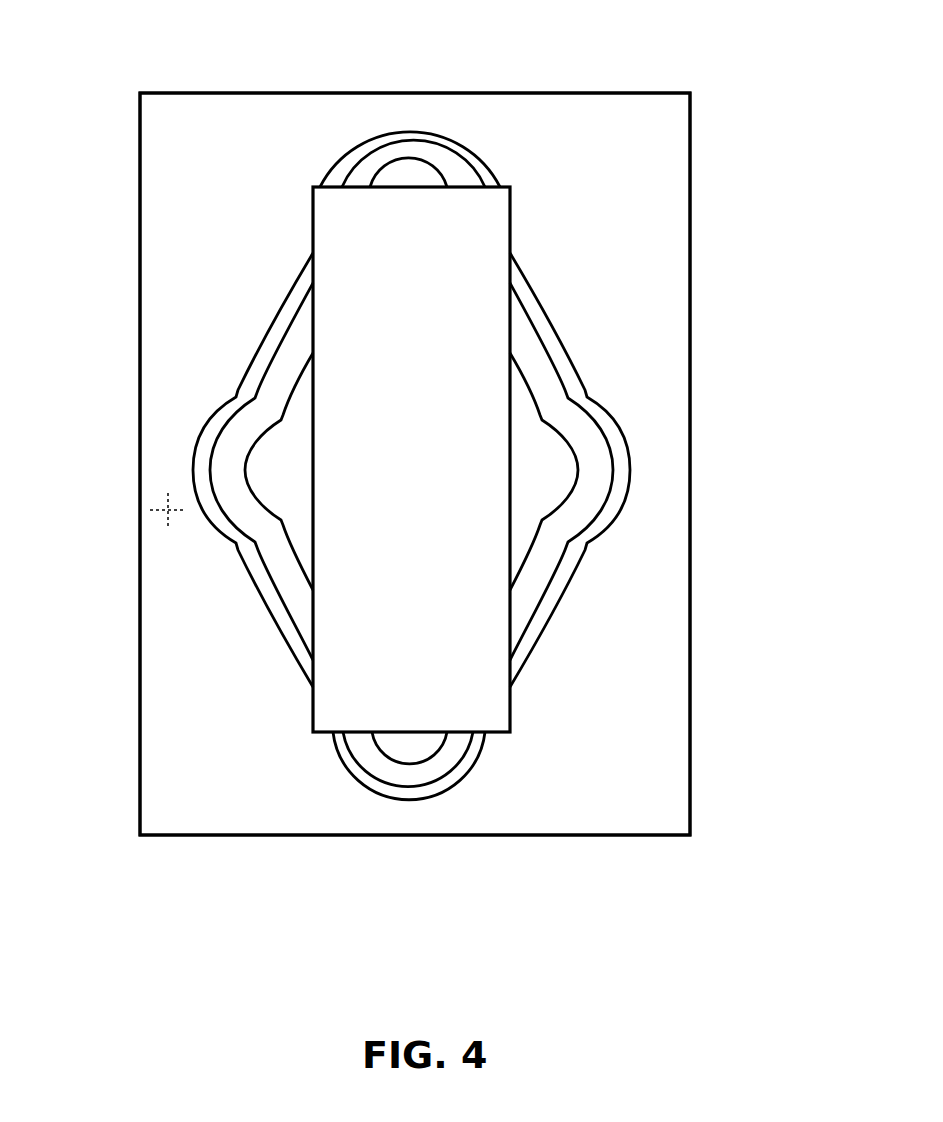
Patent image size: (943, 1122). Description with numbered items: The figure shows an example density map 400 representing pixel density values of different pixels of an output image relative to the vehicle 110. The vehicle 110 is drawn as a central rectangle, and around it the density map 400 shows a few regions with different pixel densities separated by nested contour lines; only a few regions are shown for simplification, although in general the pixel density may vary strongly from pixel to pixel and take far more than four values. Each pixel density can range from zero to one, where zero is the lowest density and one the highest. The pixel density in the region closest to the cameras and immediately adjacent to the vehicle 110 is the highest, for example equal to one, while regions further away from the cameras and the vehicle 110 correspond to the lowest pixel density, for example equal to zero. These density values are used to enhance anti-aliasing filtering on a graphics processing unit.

The density map 400 is at (705, 138).
The vehicle 110 is at (447, 683).